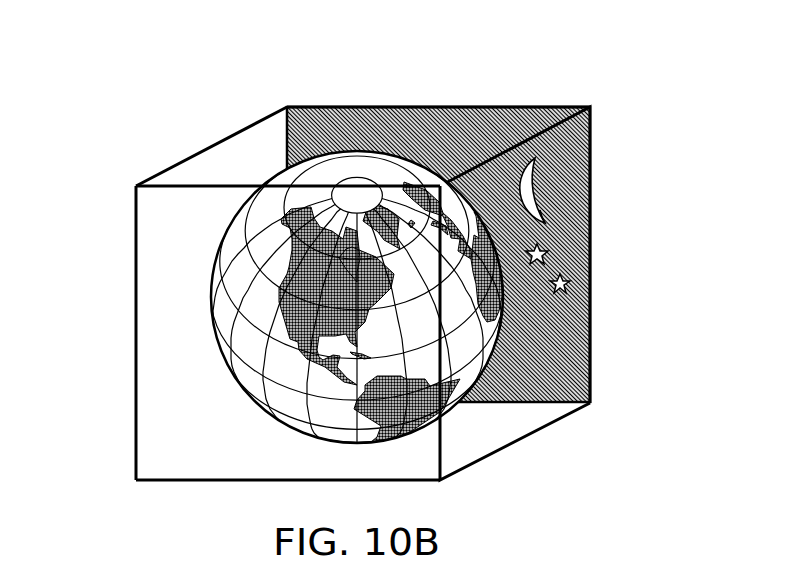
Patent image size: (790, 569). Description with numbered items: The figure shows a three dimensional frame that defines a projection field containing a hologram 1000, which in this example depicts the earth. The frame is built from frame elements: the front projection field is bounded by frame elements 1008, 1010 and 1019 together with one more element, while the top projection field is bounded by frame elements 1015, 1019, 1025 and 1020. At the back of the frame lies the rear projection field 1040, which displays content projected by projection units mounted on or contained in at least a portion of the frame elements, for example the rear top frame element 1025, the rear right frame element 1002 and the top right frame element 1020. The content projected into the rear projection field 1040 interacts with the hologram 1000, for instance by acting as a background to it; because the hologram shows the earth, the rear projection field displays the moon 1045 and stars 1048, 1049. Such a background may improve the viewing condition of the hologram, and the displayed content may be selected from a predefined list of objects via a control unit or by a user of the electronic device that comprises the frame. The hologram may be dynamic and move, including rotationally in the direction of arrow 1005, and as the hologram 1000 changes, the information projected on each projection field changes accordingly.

The hologram 1000 is at (246, 393).
The rear right frame element 1002 is at (592, 348).
The arrow 1005 is at (490, 455).
The frame element 1008 is at (248, 481).
The frame element 1010 is at (136, 378).
The frame element 1015 is at (200, 151).
The frame element 1019 is at (178, 188).
The top right frame element 1020 is at (592, 138).
The rear top frame element 1025 is at (503, 106).
The rear projection field 1040 is at (563, 187).
The moon 1045 is at (541, 209).
The star 1048 is at (545, 252).
The star 1049 is at (568, 280).